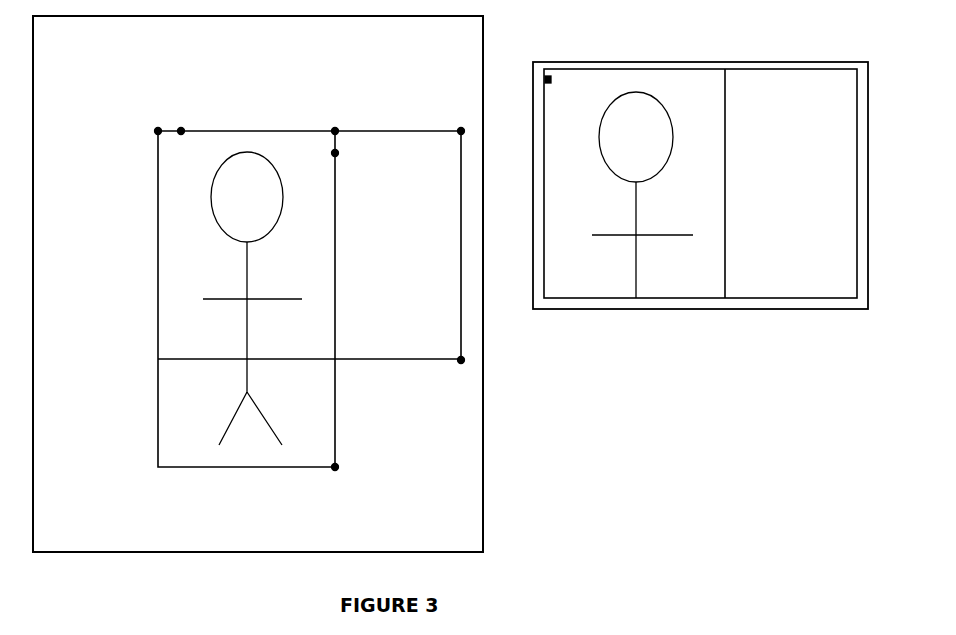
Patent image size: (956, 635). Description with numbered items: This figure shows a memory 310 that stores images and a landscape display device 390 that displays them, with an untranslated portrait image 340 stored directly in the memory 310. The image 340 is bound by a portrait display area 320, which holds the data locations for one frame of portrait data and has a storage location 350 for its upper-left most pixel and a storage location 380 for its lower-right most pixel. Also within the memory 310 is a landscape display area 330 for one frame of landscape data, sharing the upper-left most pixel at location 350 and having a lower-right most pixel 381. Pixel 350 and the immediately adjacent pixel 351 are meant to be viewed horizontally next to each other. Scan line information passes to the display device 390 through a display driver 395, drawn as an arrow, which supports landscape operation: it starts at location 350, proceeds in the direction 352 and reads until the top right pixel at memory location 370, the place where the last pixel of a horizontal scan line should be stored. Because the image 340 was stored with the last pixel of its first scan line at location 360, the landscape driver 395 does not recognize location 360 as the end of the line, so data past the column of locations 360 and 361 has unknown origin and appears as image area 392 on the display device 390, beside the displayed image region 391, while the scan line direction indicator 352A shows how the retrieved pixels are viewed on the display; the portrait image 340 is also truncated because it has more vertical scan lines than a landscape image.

The memory 310 is at (77, 60).
The portrait display area 320 is at (157, 440).
The landscape display area 330 is at (377, 131).
The portrait image 340 is at (213, 259).
The storage location 350 is at (158, 127).
The pixel 351 is at (183, 128).
The direction 352 is at (287, 117).
The scan line direction indicator 352A is at (551, 79).
The location 360 is at (335, 127).
The location 361 is at (332, 155).
The memory location 370 is at (461, 127).
The storage location 380 is at (338, 467).
The lower-right most pixel 381 is at (464, 361).
The display device 390 is at (784, 45).
The left display region 391 is at (658, 183).
The image area 392 is at (806, 195).
The display driver 395 is at (533, 237).